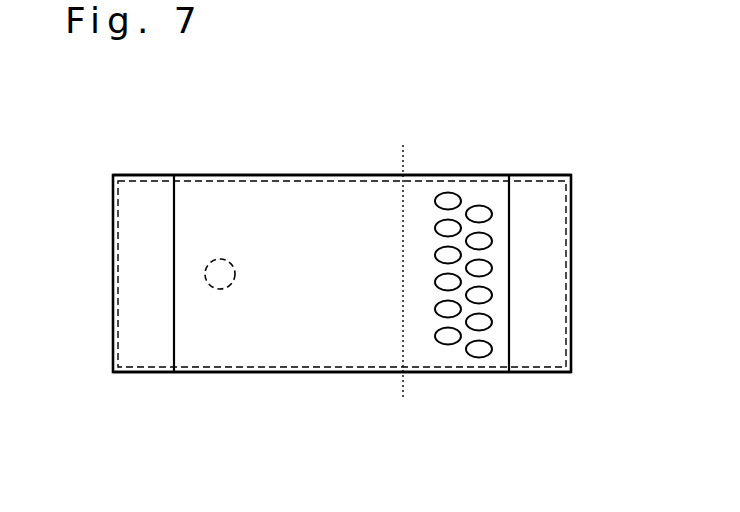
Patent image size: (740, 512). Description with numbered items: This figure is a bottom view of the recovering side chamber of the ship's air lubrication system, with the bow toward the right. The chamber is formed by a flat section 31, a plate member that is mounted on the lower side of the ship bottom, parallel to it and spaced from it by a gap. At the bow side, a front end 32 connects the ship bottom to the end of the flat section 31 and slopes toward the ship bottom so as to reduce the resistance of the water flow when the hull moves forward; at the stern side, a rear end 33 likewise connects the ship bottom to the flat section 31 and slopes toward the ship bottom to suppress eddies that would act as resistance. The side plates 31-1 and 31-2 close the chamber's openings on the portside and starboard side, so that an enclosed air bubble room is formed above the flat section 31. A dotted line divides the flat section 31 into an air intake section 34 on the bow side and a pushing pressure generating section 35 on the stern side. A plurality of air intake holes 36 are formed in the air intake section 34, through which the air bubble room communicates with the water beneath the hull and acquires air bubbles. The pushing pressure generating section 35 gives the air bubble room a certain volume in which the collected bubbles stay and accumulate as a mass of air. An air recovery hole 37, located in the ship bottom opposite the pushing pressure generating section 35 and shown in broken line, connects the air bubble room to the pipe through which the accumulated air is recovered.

The flat section 31 is at (475, 429).
The side plate 31-1 is at (545, 372).
The side plate 31-2 is at (545, 180).
The front end 32 is at (568, 238).
The rear end 33 is at (117, 238).
The air intake section 34 is at (507, 385).
The pushing pressure generating section 35 is at (175, 385).
The air intake holes 36 is at (449, 193).
The air recovery hole 37 is at (216, 262).